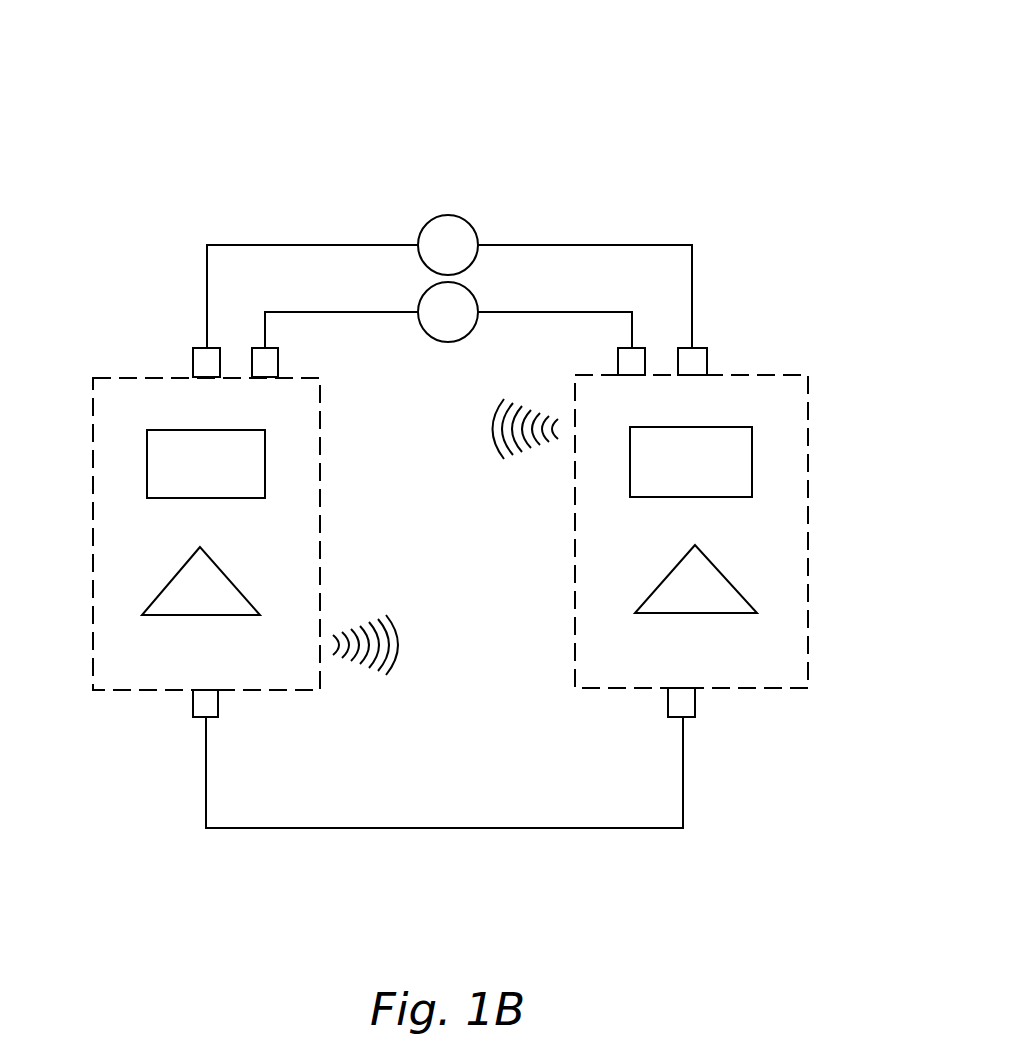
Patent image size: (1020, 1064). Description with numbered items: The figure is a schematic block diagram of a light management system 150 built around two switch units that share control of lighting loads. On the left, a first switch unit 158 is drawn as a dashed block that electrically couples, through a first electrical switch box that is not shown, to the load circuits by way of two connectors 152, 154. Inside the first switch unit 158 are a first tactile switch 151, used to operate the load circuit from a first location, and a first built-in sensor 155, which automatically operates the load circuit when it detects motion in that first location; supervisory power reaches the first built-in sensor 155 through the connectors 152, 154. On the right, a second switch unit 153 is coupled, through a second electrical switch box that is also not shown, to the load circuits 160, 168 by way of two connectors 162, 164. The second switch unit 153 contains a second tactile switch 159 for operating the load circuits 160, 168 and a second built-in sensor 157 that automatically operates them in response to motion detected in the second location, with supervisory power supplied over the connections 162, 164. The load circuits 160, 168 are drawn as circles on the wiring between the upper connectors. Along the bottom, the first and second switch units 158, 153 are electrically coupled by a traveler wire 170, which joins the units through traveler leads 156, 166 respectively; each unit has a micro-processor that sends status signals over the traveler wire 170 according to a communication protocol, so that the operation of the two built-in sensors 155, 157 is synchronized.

The light management system 150 is at (98, 112).
The first tactile switch 151 is at (265, 462).
The connector 152 is at (193, 350).
The second switch unit 153 is at (808, 527).
The connector 154 is at (278, 350).
The first built-in sensor 155 is at (233, 583).
The traveler lead 156 is at (193, 703).
The second built-in sensor 157 is at (727, 578).
The first switch unit 158 is at (320, 512).
The second tactile switch 159 is at (752, 460).
The load circuit 160 is at (448, 215).
The connector 162 is at (618, 350).
The connector 164 is at (707, 350).
The traveler lead 166 is at (695, 703).
The load circuit 168 is at (448, 342).
The traveler wire 170 is at (565, 828).